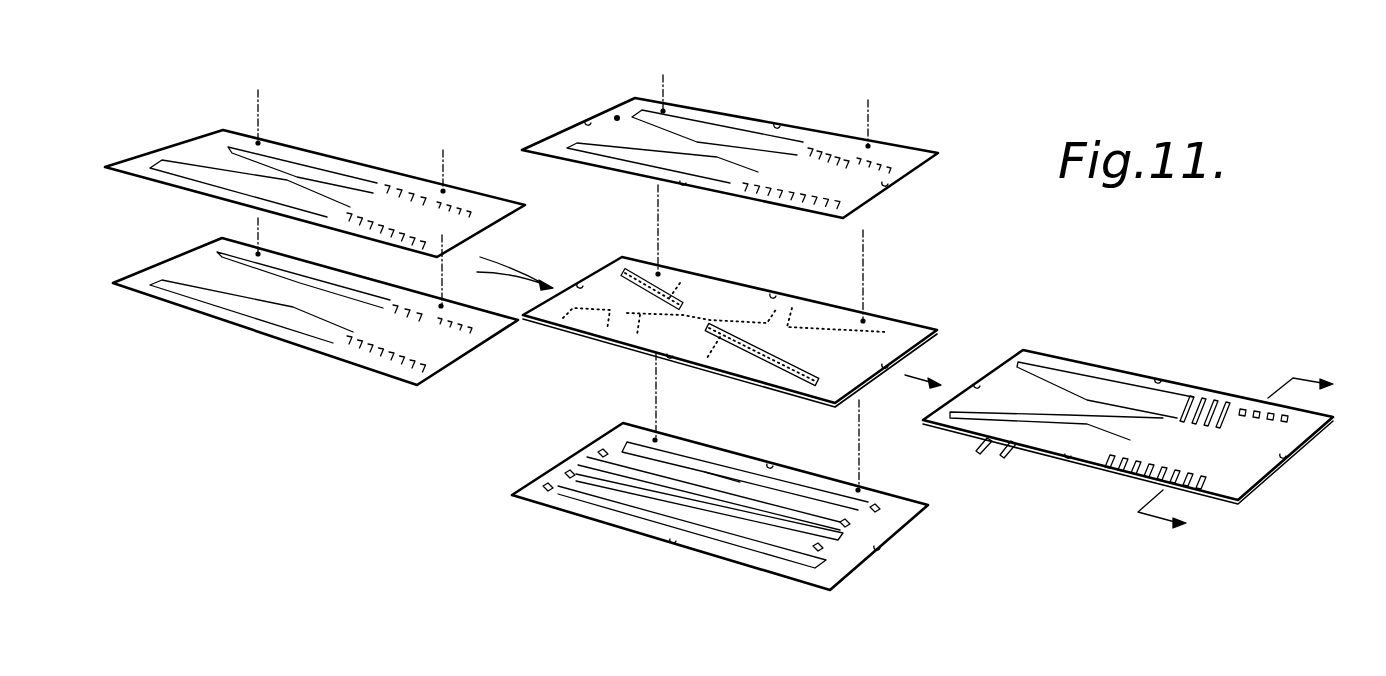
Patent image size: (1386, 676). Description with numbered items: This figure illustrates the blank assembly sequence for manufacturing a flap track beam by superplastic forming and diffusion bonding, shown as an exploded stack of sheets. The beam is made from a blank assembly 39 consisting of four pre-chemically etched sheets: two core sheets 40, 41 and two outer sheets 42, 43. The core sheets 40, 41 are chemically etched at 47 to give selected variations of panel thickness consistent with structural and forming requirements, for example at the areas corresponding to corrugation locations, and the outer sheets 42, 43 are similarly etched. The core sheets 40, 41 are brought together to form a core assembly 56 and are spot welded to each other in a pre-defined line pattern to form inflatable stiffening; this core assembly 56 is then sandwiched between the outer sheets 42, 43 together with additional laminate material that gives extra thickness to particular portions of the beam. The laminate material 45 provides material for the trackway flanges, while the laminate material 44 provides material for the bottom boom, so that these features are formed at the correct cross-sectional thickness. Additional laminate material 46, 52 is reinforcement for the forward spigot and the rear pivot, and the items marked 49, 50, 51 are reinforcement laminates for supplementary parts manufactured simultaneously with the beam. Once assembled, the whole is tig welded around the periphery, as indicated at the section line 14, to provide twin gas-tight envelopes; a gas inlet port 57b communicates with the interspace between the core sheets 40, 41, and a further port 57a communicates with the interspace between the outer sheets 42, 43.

The section line 14 is at (1244, 453).
The blank assembly 39 is at (1080, 362).
The core sheet 40 is at (192, 193).
The core sheet 41 is at (192, 313).
The outer sheet 42 is at (737, 116).
The outer sheet 43 is at (890, 540).
The laminate material 44 is at (673, 453).
The laminate material 45 is at (713, 490).
The laminate material 46 is at (544, 488).
The chemically etched area 47 is at (163, 161).
The reinforcement laminate 49 is at (577, 465).
The reinforcement laminate 50 is at (602, 450).
The reinforcement laminate 51 is at (855, 525).
The laminate material 52 is at (878, 505).
The core assembly 56 is at (903, 320).
The gas port 57a is at (979, 455).
The gas inlet port 57b is at (1003, 460).